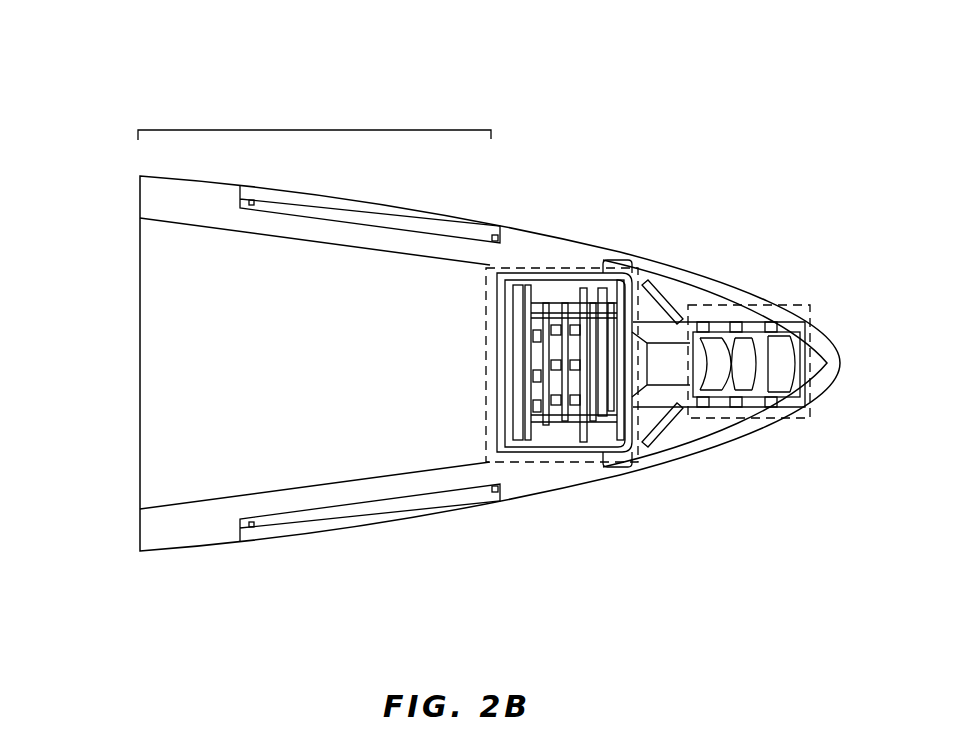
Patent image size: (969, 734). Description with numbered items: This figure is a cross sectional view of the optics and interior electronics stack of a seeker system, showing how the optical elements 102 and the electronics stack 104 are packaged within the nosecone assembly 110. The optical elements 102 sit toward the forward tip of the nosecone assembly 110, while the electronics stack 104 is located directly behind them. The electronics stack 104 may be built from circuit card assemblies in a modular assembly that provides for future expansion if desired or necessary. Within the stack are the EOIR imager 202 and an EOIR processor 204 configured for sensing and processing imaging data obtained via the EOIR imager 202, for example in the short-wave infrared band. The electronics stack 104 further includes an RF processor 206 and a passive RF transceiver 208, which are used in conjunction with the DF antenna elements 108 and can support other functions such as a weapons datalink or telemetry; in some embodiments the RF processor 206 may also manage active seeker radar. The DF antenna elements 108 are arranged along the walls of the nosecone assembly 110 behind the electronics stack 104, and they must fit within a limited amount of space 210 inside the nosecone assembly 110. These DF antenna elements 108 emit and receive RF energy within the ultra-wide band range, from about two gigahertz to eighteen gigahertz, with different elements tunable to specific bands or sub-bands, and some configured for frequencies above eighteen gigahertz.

The nosecone assembly 110 is at (139, 40).
The limited amount of space 210 is at (313, 129).
The DF antenna elements 108 is at (358, 222).
The electronics stack 104 is at (562, 265).
The optical elements 102 is at (750, 307).
The EOIR processor 204 is at (603, 296).
The EOIR imager 202 is at (615, 328).
The RF processor 206 is at (583, 456).
The passive RF transceiver 208 is at (546, 433).